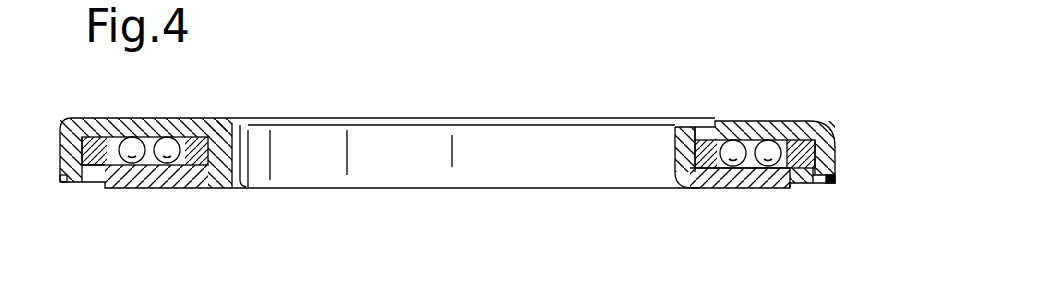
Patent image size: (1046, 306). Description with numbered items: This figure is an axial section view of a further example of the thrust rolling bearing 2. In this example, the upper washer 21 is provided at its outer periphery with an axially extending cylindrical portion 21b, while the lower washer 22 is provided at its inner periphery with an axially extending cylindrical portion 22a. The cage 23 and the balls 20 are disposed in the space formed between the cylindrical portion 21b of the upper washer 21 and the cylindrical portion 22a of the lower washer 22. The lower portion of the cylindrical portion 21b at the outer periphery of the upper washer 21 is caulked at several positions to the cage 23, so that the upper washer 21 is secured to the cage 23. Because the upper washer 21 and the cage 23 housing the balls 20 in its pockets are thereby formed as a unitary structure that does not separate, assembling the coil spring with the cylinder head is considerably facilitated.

The thrust rolling bearing 2 is at (510, 100).
The balls 20 is at (773, 137).
The upper washer 21 is at (752, 130).
The cylindrical portion 21b is at (833, 140).
The lower washer 22 is at (730, 188).
The cylindrical portion 22a is at (683, 150).
The cage 23 is at (803, 185).